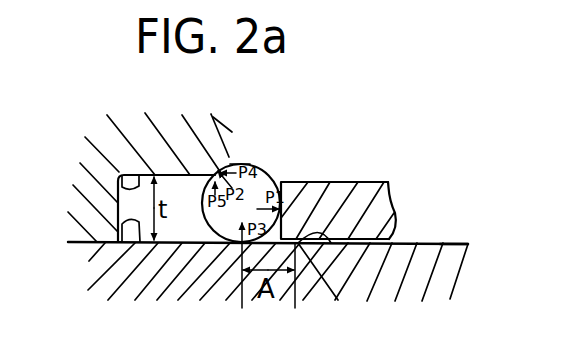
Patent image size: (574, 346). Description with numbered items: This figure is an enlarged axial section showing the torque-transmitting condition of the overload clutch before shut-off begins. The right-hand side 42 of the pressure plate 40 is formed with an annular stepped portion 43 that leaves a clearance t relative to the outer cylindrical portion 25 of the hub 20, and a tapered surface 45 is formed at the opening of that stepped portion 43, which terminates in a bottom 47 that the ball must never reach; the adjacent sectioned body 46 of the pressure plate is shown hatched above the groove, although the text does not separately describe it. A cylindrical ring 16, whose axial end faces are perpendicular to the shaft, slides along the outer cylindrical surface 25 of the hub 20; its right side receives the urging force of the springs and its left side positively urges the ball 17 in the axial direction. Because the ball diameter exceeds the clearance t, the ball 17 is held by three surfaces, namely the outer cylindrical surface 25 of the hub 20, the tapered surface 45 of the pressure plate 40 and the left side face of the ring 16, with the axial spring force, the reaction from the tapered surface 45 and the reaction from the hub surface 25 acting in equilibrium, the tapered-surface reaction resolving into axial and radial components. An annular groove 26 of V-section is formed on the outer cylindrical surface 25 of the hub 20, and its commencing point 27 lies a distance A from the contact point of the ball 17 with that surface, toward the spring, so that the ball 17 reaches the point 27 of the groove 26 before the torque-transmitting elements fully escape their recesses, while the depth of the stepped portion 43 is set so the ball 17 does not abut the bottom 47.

The ring 16 is at (388, 182).
The ball 17 is at (272, 180).
The hub 20 is at (452, 262).
The outer cylindrical portion of the hub 25 is at (183, 243).
The annular groove 26 is at (338, 300).
The commencing point of the annular groove 27 is at (331, 243).
The pressure plate 40 is at (232, 162).
The right-hand side of the pressure plate 42 is at (225, 132).
The annular stepped portion 43 is at (133, 175).
The tapered surface 45 is at (240, 163).
The housing block 46 is at (183, 175).
The bottom of the stepped portion 47 is at (132, 243).